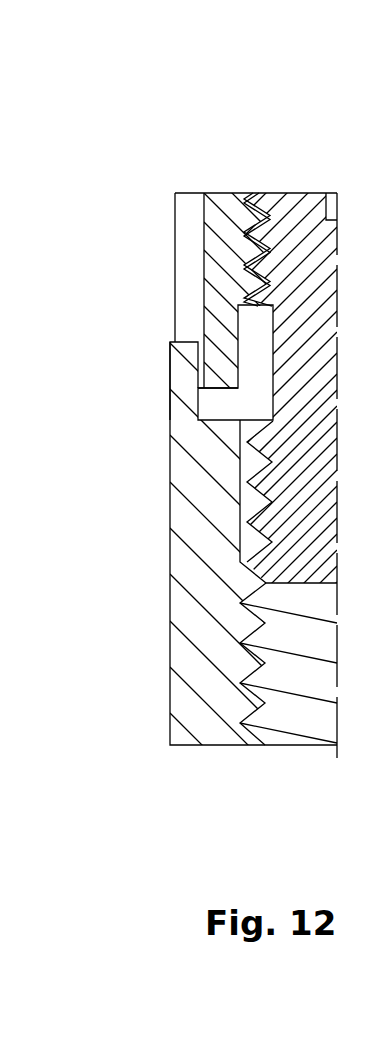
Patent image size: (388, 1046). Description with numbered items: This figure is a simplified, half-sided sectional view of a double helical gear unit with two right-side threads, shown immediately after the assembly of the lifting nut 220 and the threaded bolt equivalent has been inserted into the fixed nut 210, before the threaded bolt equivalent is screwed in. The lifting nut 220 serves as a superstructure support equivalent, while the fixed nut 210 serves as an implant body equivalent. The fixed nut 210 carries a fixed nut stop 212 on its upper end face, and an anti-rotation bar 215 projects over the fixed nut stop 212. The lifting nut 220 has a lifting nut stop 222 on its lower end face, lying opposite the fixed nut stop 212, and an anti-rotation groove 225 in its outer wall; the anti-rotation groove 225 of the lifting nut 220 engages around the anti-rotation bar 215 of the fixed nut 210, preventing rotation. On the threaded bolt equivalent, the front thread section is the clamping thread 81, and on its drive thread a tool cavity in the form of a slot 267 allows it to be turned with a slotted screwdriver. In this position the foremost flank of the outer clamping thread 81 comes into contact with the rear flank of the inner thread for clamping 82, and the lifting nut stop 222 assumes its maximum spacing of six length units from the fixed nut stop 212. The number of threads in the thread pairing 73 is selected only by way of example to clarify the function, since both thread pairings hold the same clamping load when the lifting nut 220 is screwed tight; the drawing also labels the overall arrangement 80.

The thread pairing 73 is at (257, 172).
The slot 267 is at (331, 219).
The lifting nut 220 is at (218, 243).
The anti-rotation groove 225 is at (190, 283).
The lifting nut stop 222 is at (216, 388).
The anti-rotation bar 215 is at (185, 380).
The fixed nut stop 212 is at (226, 422).
The clamping thread 81 is at (246, 521).
The inner thread for clamping 82 is at (258, 631).
The fixed nut 210 is at (195, 667).
The container assembly 80 is at (152, 694).